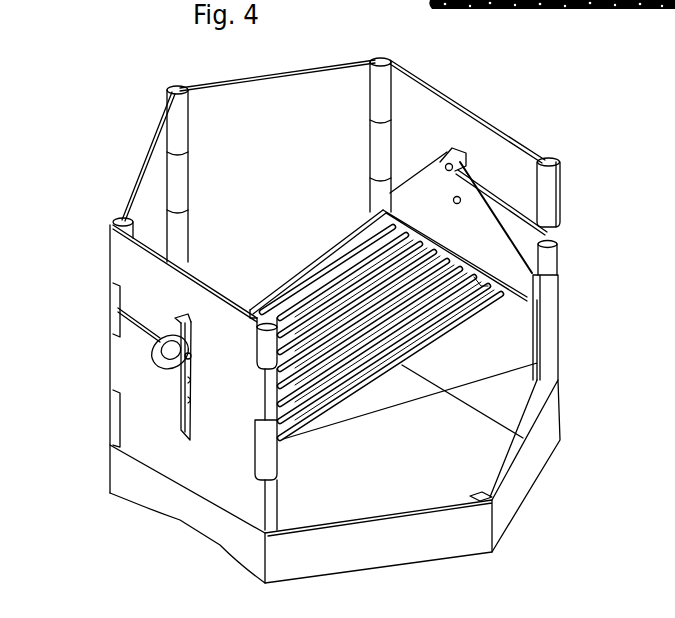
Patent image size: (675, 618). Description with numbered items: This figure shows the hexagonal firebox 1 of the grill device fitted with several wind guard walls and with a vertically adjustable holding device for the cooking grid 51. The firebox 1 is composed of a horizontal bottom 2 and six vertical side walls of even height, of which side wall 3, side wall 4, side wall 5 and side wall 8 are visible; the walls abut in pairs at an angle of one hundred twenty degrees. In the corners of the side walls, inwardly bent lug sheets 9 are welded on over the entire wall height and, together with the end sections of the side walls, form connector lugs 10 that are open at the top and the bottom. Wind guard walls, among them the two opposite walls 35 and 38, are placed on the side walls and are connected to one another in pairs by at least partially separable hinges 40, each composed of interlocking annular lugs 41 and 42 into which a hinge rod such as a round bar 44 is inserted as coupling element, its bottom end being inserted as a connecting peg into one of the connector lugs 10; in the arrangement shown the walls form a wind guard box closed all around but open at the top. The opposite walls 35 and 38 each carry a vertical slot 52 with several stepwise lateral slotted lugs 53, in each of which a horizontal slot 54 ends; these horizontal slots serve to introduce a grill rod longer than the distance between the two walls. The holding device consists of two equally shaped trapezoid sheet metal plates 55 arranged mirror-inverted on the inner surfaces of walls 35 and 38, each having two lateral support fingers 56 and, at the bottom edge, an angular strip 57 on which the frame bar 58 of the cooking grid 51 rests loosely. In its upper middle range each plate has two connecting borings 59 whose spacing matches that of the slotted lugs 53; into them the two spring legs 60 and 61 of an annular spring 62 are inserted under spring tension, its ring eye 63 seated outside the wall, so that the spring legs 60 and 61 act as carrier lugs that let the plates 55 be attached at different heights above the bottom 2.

The firebox 1 is at (125, 493).
The bottom 2 is at (374, 465).
The side wall 3 is at (528, 477).
The side wall 4 is at (395, 515).
The side wall 5 is at (165, 522).
The side wall 8 is at (452, 373).
The lug sheet 9 is at (537, 400).
The connector lug 10 is at (478, 497).
The wind guard wall 35 is at (210, 300).
The wind guard wall 38 is at (437, 96).
The hinge 40 is at (178, 86).
The annular lug 41 is at (370, 92).
The annular lug 42 is at (180, 125).
The round bar 44 is at (549, 260).
The cooking grid 51 is at (389, 378).
The vertical slot 52 is at (472, 158).
The slotted lug 53 is at (191, 400).
The horizontal slot 54 is at (149, 325).
The sheet metal plate 55 is at (386, 192).
The support finger 56 is at (541, 300).
The angular strip 57 is at (515, 308).
The frame bar 58 is at (478, 262).
The connecting boring 59 is at (482, 190).
The spring leg 60 is at (450, 167).
The spring leg 61 is at (452, 200).
The annular spring 62 is at (151, 355).
The ring eye 63 is at (162, 363).